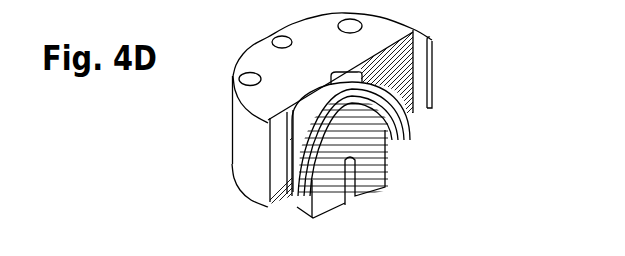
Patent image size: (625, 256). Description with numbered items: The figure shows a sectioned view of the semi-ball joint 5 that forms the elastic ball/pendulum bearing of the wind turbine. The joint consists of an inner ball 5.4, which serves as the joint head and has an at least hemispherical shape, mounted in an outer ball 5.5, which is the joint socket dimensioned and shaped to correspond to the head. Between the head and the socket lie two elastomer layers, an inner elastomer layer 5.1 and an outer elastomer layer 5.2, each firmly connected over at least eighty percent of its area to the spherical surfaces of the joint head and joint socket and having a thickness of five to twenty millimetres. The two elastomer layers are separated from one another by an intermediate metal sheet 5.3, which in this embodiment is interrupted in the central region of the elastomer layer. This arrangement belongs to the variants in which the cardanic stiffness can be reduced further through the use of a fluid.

The semi-ball joint 5 is at (262, 48).
The inner elastomer layer 5.1 is at (378, 129).
The outer elastomer layer 5.2 is at (398, 104).
The intermediate metal sheet 5.3 is at (386, 114).
The inner ball 5.4 is at (347, 103).
The outer ball 5.5 is at (285, 183).